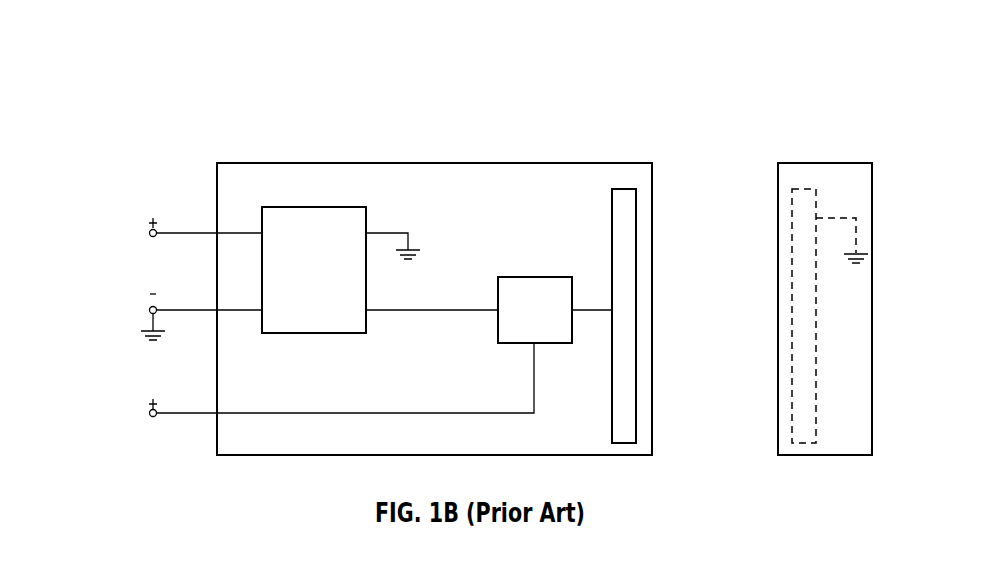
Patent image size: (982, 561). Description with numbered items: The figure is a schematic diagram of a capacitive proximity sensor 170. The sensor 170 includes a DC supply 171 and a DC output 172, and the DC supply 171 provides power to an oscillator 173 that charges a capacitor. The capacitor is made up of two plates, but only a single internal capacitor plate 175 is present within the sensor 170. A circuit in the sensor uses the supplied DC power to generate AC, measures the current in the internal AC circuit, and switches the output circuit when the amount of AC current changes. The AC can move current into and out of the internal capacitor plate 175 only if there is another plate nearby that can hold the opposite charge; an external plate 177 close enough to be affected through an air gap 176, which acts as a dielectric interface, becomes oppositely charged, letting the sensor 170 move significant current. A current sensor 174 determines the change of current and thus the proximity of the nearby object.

The sensor 170 is at (401, 45).
The DC supply 171 is at (138, 268).
The DC output 172 is at (130, 405).
The oscillator 173 is at (305, 221).
The current sensor 174 is at (546, 283).
The capacitor plate 175 is at (620, 213).
The air gap 176 is at (736, 298).
The external plate 177 is at (804, 202).